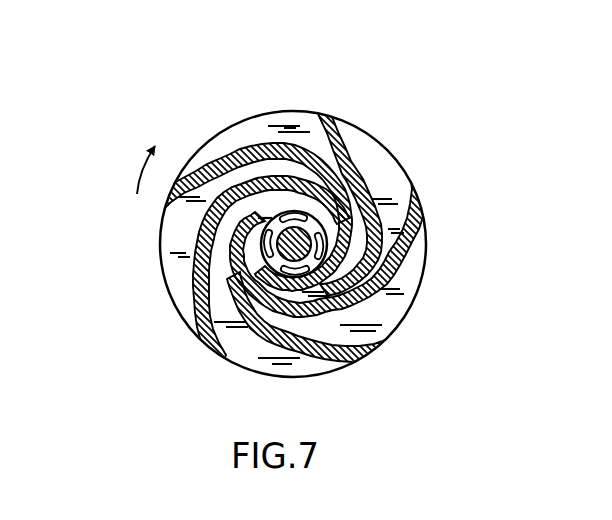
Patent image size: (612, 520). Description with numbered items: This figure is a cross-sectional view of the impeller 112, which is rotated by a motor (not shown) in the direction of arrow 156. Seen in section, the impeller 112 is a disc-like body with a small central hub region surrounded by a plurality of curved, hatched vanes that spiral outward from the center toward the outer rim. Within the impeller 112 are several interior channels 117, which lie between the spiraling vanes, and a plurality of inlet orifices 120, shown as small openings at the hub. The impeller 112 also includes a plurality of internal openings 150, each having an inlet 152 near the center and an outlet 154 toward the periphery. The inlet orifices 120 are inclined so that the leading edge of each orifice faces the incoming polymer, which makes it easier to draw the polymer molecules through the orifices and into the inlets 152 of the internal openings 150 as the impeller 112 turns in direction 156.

The impeller 112 is at (400, 126).
The interior channels 117 is at (278, 118).
The inlet orifices 120 is at (323, 249).
The internal openings 150 is at (400, 199).
The inlet 152 is at (284, 208).
The outlet 154 is at (362, 120).
The direction of rotation 156 is at (138, 188).